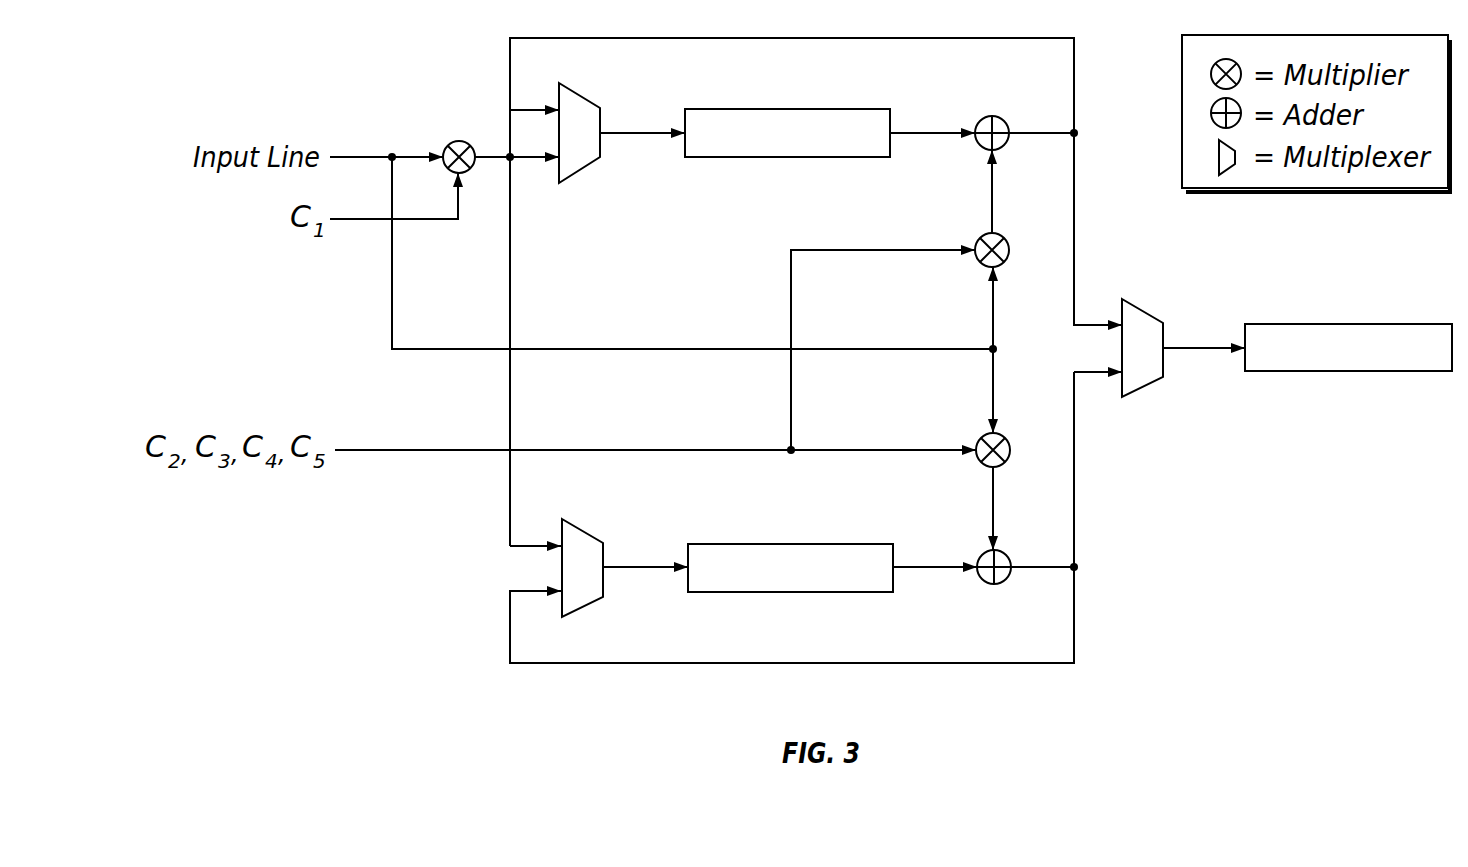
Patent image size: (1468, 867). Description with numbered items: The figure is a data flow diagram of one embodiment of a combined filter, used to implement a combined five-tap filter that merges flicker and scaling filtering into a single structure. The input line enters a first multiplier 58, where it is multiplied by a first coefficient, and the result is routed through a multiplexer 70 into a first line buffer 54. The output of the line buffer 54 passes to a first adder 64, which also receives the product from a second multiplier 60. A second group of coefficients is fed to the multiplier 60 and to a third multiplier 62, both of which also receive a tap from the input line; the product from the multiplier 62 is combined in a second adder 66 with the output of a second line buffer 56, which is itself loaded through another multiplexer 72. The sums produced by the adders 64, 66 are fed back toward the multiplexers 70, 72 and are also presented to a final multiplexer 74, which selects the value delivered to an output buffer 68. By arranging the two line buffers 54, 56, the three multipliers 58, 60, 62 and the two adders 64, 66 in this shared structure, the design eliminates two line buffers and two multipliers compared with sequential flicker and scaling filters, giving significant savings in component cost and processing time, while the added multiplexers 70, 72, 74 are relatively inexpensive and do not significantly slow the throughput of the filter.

The line buffer 54 is at (856, 108).
The line buffer 56 is at (858, 543).
The multiplier 58 is at (452, 140).
The multiplier 60 is at (1004, 237).
The multiplier 62 is at (1005, 437).
The adder 64 is at (1004, 119).
The adder 66 is at (1006, 554).
The output buffer 68 is at (1410, 323).
The multiplexer 70 is at (582, 93).
The multiplexer 72 is at (585, 529).
The multiplexer 74 is at (1143, 310).